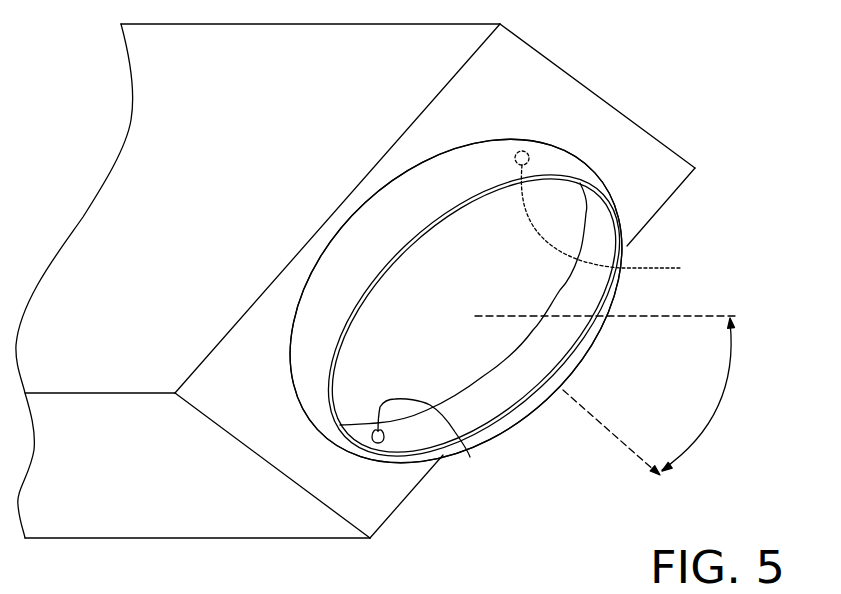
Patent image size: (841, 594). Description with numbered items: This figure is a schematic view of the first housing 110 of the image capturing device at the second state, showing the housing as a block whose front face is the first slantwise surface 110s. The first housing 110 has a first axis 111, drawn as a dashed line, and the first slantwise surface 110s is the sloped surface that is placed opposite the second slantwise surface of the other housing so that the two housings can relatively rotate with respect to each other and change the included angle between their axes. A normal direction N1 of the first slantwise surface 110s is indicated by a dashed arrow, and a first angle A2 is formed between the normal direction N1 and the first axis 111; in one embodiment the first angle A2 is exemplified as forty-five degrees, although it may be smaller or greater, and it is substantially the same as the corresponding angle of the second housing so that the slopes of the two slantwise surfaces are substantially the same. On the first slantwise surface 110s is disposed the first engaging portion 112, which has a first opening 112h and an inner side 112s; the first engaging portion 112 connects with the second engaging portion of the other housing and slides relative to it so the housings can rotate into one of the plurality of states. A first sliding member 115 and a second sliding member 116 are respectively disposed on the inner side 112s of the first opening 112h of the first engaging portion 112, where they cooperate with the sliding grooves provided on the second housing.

The first housing 110 is at (549, 82).
The first slantwise surface 110s is at (652, 198).
The first axis 111 is at (713, 316).
The first engaging portion 112 is at (577, 173).
The first opening 112h is at (530, 280).
The inner side 112s is at (547, 348).
The first sliding member 115 is at (617, 217).
The second sliding member 116 is at (433, 443).
The first angle A2 is at (702, 394).
The normal direction N1 is at (670, 487).